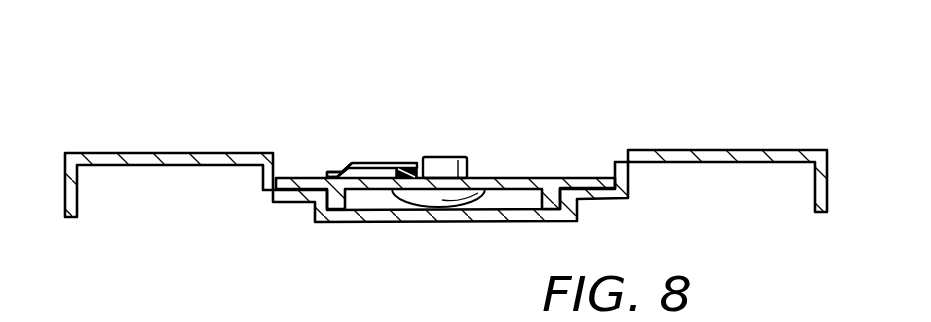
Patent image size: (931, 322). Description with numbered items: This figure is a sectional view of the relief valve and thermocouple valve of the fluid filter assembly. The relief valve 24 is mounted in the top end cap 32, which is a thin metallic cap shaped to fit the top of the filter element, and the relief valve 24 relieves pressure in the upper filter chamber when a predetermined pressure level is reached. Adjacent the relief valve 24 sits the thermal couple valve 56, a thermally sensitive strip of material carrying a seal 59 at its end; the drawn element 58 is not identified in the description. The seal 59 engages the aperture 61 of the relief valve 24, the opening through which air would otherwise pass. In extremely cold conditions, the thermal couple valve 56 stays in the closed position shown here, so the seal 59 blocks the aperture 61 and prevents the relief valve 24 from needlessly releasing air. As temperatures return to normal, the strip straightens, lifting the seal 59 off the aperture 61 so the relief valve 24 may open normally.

The relief valve 24 is at (466, 156).
The top end cap 32 is at (655, 150).
The thermal couple valve 56 is at (377, 161).
The bent tab of lead 58 is at (350, 162).
The seal 59 is at (398, 167).
The aperture 61 is at (403, 182).